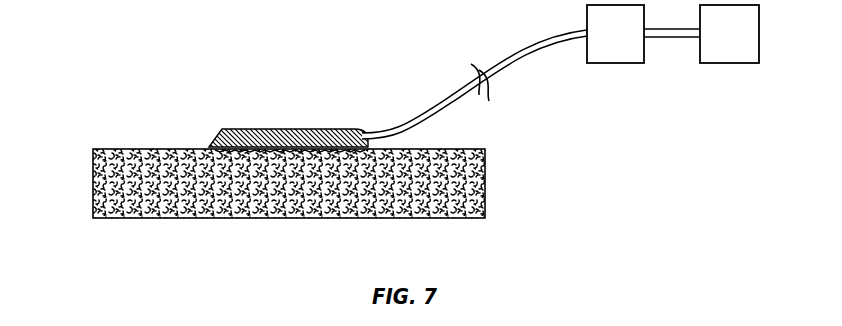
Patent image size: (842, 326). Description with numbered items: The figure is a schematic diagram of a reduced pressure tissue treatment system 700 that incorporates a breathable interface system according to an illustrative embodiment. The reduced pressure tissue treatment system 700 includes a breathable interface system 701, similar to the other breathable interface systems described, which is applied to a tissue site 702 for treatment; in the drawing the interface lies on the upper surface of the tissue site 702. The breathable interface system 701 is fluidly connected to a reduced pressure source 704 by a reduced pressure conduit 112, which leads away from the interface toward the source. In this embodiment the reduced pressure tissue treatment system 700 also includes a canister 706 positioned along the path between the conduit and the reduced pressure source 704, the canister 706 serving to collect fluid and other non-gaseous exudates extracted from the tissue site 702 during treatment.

The reduced pressure tissue treatment system 700 is at (136, 51).
The breathable interface system 701 is at (261, 119).
The tissue site 702 is at (288, 152).
The reduced pressure conduit 112 is at (440, 106).
The canister 706 is at (597, 45).
The reduced pressure source 704 is at (711, 45).